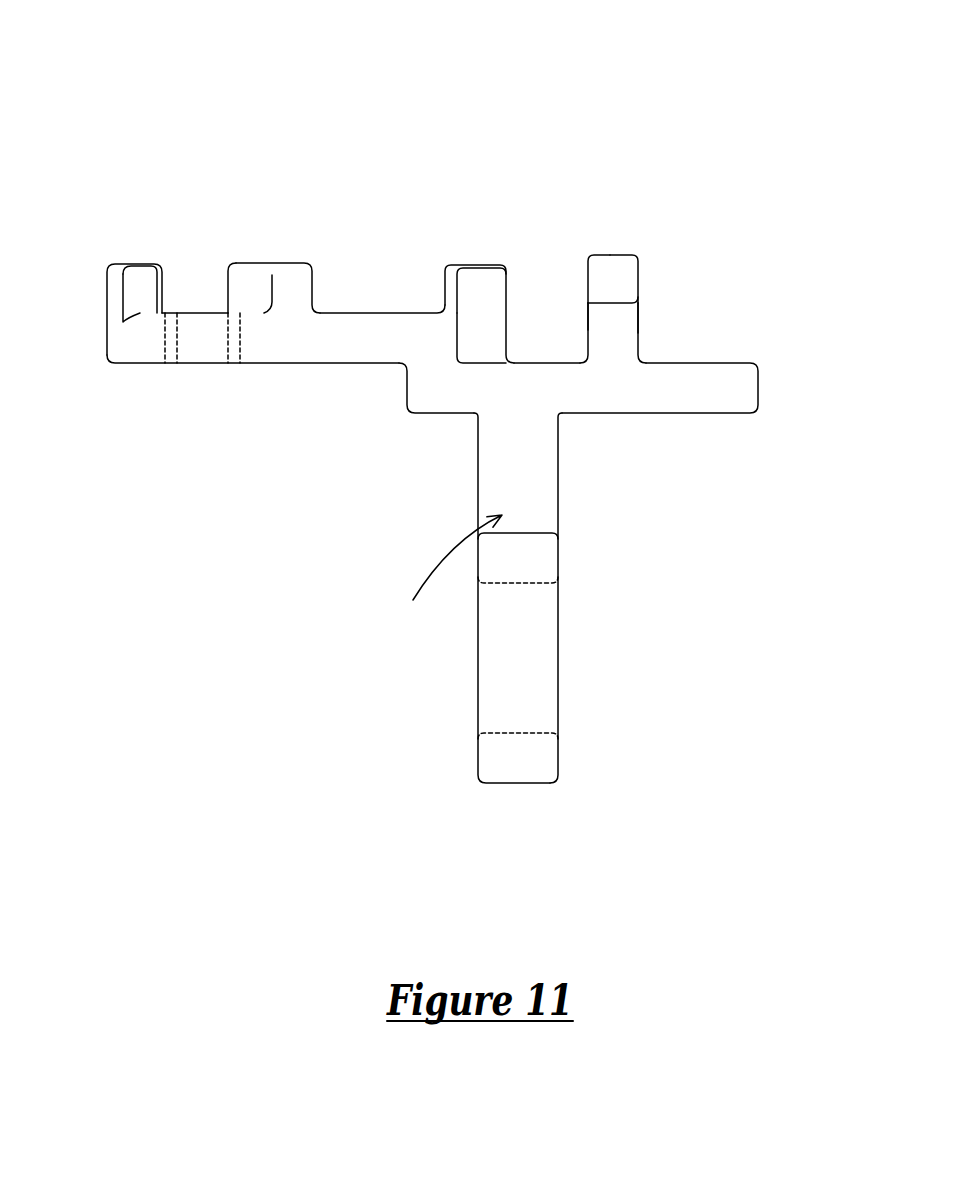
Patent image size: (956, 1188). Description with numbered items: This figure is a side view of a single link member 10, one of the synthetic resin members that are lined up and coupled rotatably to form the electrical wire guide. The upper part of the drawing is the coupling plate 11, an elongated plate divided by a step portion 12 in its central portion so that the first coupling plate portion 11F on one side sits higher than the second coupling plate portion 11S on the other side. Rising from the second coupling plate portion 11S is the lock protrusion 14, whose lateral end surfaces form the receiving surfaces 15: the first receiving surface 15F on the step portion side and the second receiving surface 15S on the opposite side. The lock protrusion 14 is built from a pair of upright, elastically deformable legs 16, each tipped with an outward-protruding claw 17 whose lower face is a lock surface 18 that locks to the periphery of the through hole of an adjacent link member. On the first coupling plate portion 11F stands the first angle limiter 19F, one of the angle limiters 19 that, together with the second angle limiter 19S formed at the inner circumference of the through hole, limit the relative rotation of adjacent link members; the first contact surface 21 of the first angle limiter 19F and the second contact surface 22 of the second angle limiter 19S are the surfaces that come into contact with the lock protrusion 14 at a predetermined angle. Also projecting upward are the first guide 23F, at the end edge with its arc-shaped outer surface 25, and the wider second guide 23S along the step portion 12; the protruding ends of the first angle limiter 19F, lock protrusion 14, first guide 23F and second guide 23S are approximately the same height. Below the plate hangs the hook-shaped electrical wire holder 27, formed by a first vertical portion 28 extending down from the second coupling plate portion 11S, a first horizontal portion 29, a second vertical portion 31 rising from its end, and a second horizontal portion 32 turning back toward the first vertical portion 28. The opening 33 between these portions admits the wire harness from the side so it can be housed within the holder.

The link member 10 is at (352, 67).
The coupling plate 11 is at (370, 505).
The first coupling plate portion 11F is at (307, 342).
The second coupling plate portion 11S is at (557, 398).
The step portion 12 is at (430, 327).
The lock protrusion 14 is at (620, 263).
The receiving surface 15 is at (713, 502).
The first receiving surface 15F is at (587, 330).
The second receiving surface 15S is at (638, 333).
The leg 16 is at (622, 322).
The claw 17 is at (603, 267).
The lock surface 18 is at (613, 305).
The angle limiter 19 is at (265, 185).
The first angle limiter 19F is at (254, 275).
The second angle limiter 19S is at (167, 320).
The first contact surface 21 is at (228, 300).
The second contact surface 22 is at (174, 337).
The first guide 23F is at (117, 275).
The second guide 23S is at (480, 280).
The outer surface 25 is at (115, 292).
The electrical wire holder 27 is at (500, 705).
The first vertical portion 28 is at (497, 493).
The first horizontal portion 29 is at (518, 767).
The second vertical portion 31 is at (543, 705).
The second horizontal portion 32 is at (522, 562).
The opening 33 is at (447, 574).